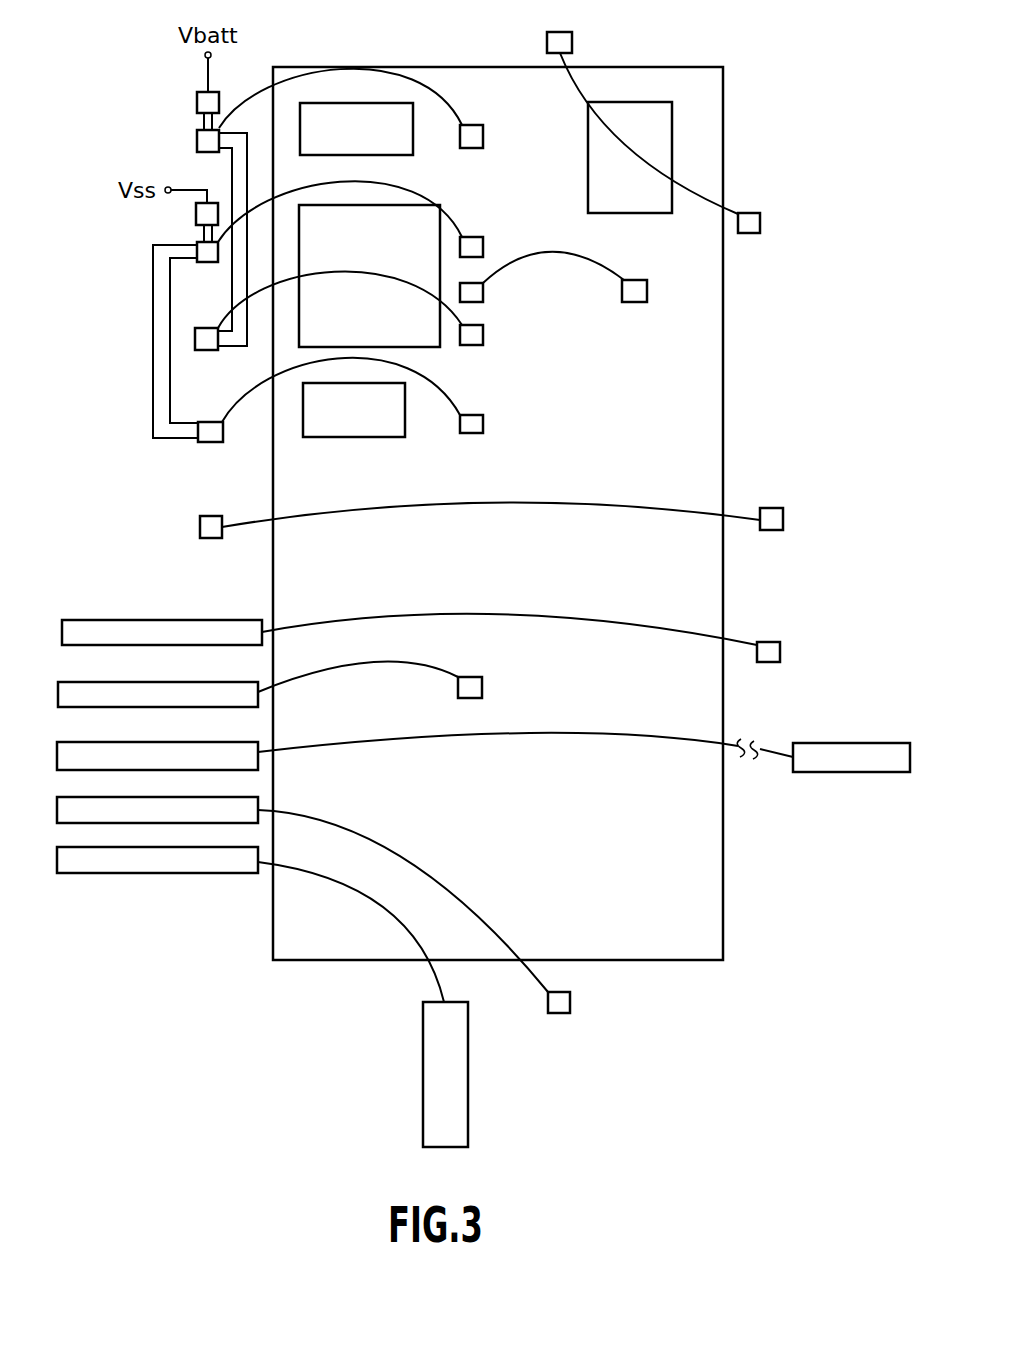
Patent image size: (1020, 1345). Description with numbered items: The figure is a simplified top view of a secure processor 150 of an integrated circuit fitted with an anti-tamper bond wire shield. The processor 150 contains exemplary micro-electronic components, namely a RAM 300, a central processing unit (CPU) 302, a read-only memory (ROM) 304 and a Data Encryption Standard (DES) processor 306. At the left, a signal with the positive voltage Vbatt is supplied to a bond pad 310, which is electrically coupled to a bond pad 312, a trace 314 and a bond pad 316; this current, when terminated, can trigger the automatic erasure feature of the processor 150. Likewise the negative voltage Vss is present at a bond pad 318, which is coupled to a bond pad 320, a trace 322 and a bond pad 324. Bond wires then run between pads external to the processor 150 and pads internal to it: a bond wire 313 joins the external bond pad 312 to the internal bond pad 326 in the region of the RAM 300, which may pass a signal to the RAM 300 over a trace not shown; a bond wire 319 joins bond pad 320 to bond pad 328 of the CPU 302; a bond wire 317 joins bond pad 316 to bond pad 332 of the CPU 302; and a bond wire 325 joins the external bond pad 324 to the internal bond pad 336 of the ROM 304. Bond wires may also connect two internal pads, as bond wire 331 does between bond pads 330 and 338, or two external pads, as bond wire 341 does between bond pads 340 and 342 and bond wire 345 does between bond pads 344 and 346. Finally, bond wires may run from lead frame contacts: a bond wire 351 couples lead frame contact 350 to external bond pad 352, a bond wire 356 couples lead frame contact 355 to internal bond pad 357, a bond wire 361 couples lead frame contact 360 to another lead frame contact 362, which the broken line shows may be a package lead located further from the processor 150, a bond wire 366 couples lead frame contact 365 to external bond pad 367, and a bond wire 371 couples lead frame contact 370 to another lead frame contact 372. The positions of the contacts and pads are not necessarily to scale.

The secure processor 150 is at (724, 348).
The RAM 300 is at (385, 103).
The central processing unit (CPU) 302 is at (405, 347).
The read-only memory (ROM) 304 is at (358, 437).
The Data Encryption Standard (DES) processor 306 is at (588, 193).
The bond pad 310 is at (197, 103).
The bond pad 312 is at (197, 142).
The bond wire 313 is at (443, 100).
The trace 314 is at (247, 350).
The bond pad 316 is at (197, 340).
The bond wire 317 is at (450, 308).
The bond pad 318 is at (196, 216).
The bond wire 319 is at (420, 196).
The bond pad 320 is at (218, 263).
The trace 322 is at (153, 308).
The bond pad 324 is at (215, 443).
The bond wire 325 is at (455, 398).
The bond pad 326 is at (483, 135).
The bond pad 328 is at (483, 243).
The bond pad 330 is at (483, 290).
The bond wire 331 is at (581, 258).
The bond pad 332 is at (483, 340).
The bond pad 336 is at (483, 422).
The bond pad 338 is at (647, 290).
The bond pad 340 is at (572, 42).
The bond wire 341 is at (583, 92).
The bond pad 342 is at (760, 220).
The bond pad 344 is at (200, 527).
The bond wire 345 is at (466, 503).
The bond pad 346 is at (783, 515).
The lead frame contact 350 is at (127, 620).
The bond wire 351 is at (460, 613).
The bond pad 352 is at (780, 648).
The lead frame contact 355 is at (123, 682).
The bond wire 356 is at (398, 661).
The bond pad 357 is at (482, 686).
The lead frame contact 360 is at (125, 742).
The bond wire 361 is at (555, 733).
The lead frame contact 362 is at (828, 743).
The lead frame contact 365 is at (125, 797).
The bond wire 366 is at (402, 858).
The bond pad 367 is at (570, 1002).
The lead frame contact 370 is at (127, 873).
The bond wire 371 is at (420, 944).
The lead frame contact 372 is at (468, 1090).